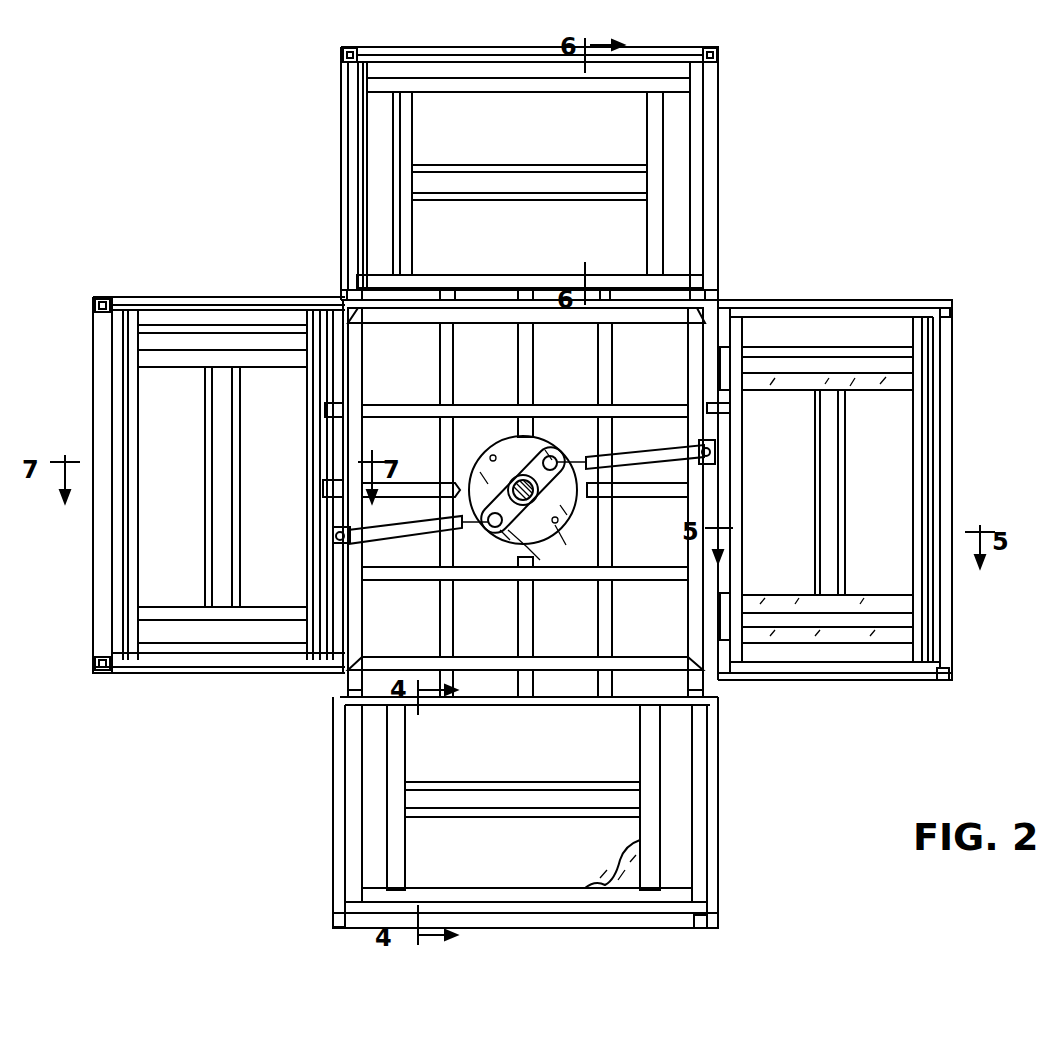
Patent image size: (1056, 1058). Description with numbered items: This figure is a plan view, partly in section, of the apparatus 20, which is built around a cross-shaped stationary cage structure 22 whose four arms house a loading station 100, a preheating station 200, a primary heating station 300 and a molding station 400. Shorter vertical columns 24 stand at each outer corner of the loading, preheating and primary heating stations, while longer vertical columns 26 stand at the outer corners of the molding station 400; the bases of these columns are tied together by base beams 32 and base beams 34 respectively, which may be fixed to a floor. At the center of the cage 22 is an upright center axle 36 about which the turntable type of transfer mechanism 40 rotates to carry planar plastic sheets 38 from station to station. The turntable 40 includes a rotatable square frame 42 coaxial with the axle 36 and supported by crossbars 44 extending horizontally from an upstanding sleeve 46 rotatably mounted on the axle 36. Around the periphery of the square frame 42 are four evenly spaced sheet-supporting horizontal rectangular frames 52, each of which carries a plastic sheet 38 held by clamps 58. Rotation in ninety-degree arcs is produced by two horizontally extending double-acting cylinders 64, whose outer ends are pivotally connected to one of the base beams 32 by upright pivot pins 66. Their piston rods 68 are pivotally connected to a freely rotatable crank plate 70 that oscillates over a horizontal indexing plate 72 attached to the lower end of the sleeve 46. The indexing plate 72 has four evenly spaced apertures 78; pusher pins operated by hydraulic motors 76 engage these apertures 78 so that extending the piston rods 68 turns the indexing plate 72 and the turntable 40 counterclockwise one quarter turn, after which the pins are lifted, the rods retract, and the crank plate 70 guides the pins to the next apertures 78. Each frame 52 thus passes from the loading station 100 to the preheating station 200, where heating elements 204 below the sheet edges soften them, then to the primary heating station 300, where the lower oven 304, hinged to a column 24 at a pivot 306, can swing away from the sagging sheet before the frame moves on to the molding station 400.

The apparatus 20 is at (758, 268).
The cross-shaped stationary cage structure 22 is at (720, 740).
The vertical columns 24 is at (340, 58).
The longer vertical columns 26 is at (96, 300).
The base beams 32 is at (466, 75).
The base beams 34 is at (92, 543).
The center axle 36 is at (540, 492).
The plastic sheets 38 is at (605, 865).
The turntable type of transfer mechanism 40 is at (360, 327).
The rotatable square frame 42 is at (356, 395).
The crossbars 44 is at (512, 376).
The upstanding sleeve 46 is at (530, 432).
The sheet-supporting horizontal rectangular frames 52 is at (540, 97).
The clamps 58 is at (325, 318).
The cylinders 64 is at (410, 530).
The upright pivot pins 66 is at (332, 538).
The piston rods 68 is at (472, 522).
The crank plate 70 is at (527, 547).
The indexing plate 72 is at (558, 535).
The hydraulic motors 76 is at (553, 456).
The apertures 78 is at (493, 455).
The loading station 100 is at (345, 806).
The preheating station 200 is at (935, 452).
The heating elements 204 is at (760, 385).
The primary heating station 300 is at (720, 148).
The lower oven 304 is at (614, 92).
The pivot 306 is at (714, 47).
The molding station 400 is at (140, 398).